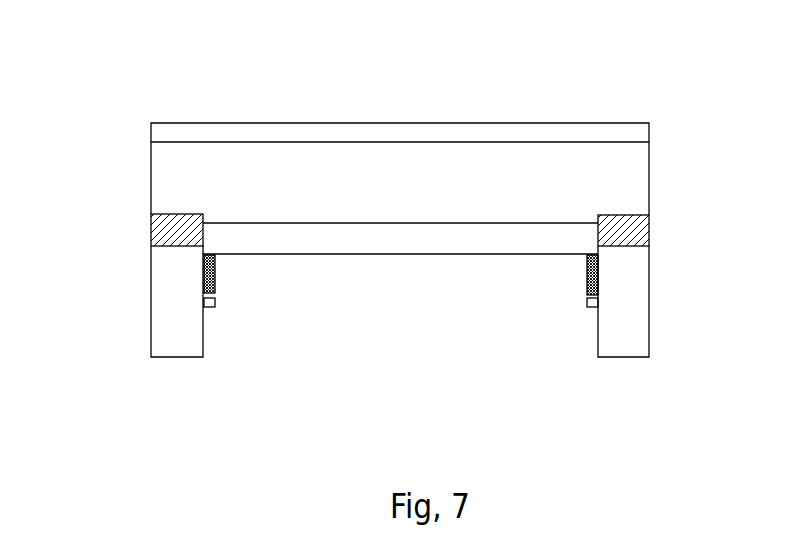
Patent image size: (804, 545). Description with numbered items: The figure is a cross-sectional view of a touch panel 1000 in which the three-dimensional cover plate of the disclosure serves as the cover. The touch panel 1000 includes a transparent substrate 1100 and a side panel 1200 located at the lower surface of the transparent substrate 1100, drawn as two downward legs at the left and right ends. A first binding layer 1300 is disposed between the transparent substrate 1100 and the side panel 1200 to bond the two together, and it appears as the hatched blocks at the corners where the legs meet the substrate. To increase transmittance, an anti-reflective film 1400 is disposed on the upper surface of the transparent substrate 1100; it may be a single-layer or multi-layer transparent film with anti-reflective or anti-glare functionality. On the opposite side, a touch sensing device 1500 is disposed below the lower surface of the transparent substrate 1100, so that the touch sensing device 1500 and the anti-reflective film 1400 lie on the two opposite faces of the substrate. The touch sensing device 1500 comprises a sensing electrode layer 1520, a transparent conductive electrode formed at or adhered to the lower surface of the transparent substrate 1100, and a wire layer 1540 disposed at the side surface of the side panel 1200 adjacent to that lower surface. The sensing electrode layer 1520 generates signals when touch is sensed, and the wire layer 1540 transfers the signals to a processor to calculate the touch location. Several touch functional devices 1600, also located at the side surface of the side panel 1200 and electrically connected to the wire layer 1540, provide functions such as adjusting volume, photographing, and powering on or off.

The touch panel 1000 is at (87, 54).
The transparent substrate 1100 is at (637, 183).
The anti-reflective film 1400 is at (640, 133).
The first binding layer 1300 is at (640, 228).
The side panel 1200 is at (640, 310).
The touch sensing device 1500 is at (367, 318).
The sensing electrode layer 1520 is at (362, 238).
The wire layer 1540 is at (216, 268).
The touch functional devices 1600 is at (587, 301).